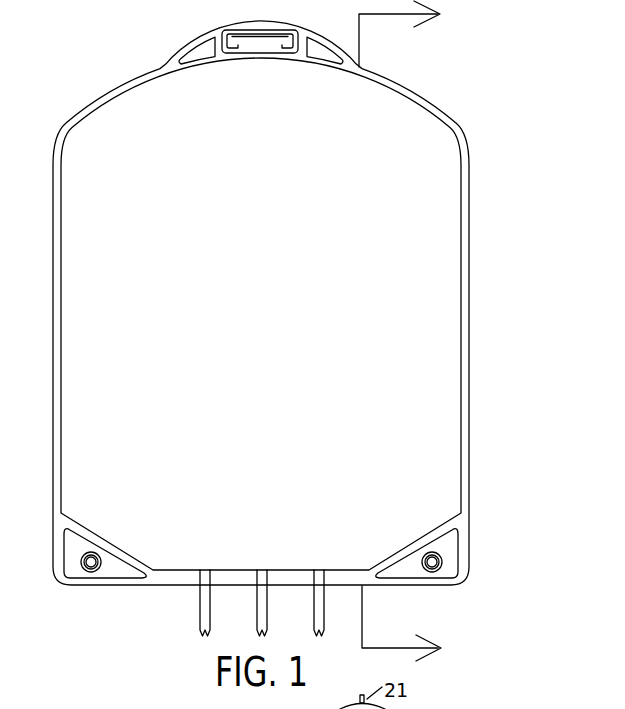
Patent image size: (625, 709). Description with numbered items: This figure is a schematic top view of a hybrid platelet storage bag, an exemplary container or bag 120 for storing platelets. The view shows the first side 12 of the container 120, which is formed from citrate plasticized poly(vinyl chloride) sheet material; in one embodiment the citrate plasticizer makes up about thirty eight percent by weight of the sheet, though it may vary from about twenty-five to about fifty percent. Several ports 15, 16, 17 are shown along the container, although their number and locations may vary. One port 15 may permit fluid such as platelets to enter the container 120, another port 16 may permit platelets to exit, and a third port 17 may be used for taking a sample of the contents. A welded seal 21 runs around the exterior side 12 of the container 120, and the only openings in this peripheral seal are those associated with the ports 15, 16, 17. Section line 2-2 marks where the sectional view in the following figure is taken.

The container or bag 120 is at (513, 197).
The first side 12 is at (267, 310).
The welded seal 21 is at (466, 333).
The port 15 is at (203, 570).
The port 16 is at (260, 570).
The port 17 is at (318, 570).
The section line 2- 2 is at (411, 333).